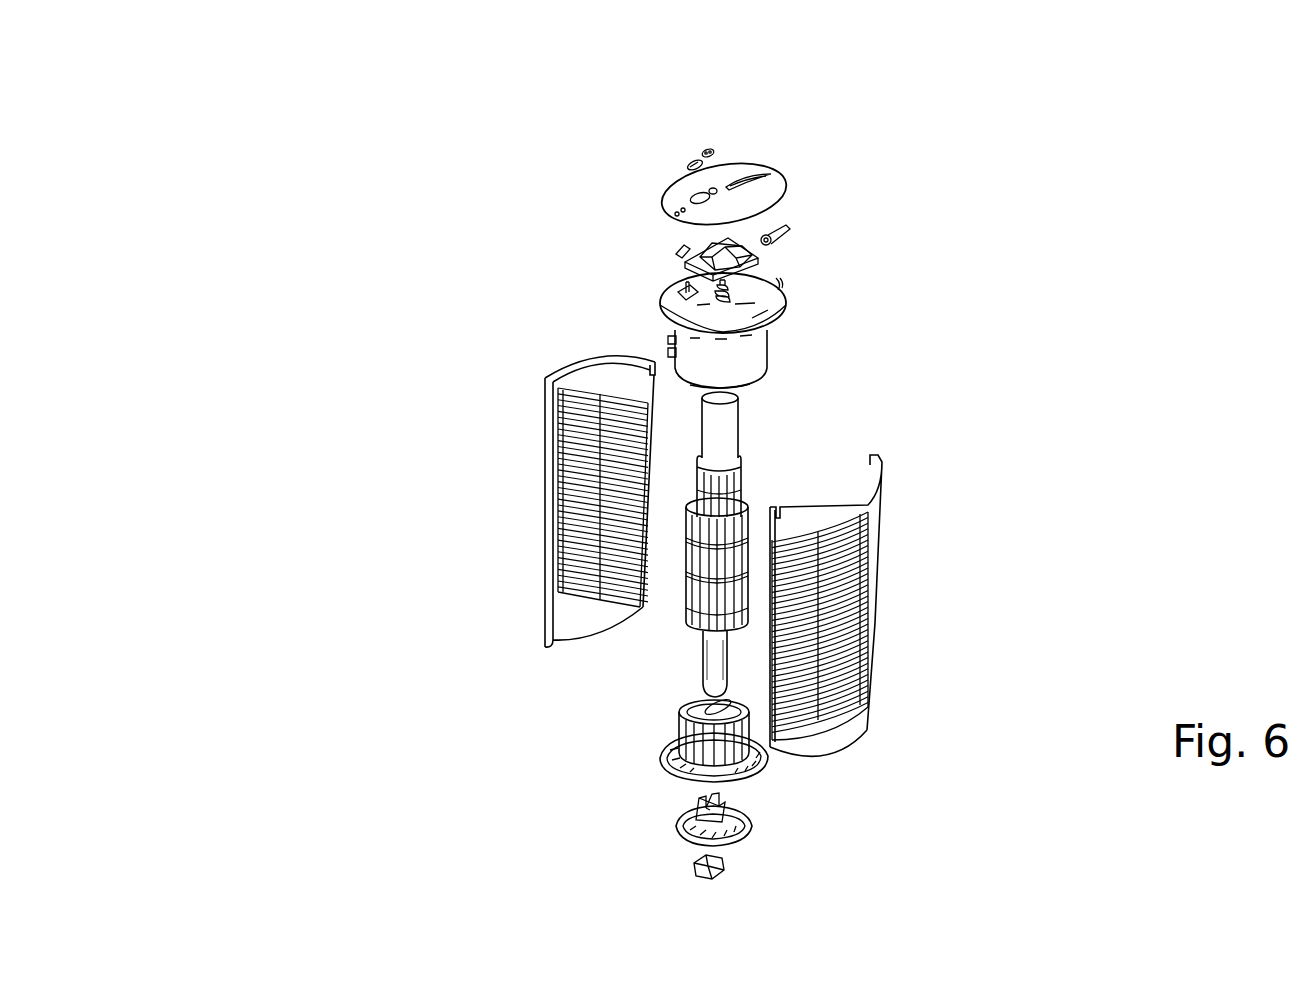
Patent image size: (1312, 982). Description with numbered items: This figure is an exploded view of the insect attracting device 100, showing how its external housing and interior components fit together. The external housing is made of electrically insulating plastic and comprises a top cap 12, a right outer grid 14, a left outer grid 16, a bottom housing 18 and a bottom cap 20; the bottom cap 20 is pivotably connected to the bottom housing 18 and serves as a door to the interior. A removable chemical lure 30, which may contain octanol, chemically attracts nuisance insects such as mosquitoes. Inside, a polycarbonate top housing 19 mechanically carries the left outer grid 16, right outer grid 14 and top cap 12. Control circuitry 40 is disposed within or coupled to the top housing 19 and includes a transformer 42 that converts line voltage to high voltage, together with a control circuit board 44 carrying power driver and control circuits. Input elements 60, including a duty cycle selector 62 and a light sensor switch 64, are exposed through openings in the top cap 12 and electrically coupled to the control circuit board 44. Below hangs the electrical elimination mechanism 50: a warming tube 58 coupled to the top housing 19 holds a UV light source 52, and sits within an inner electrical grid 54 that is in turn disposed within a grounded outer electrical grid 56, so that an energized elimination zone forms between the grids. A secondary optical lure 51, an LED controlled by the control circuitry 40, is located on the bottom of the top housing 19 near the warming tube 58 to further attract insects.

The insect attracting device 100 is at (312, 98).
The top cap 12 is at (757, 199).
The duty cycle selector 62 is at (705, 151).
The light sensor switch 64 is at (678, 165).
The input elements 60 is at (657, 250).
The transformer 42 is at (760, 258).
The control circuitry 40 is at (669, 322).
The control circuit board 44 is at (785, 302).
The top housing 19 is at (767, 338).
The secondary optical lure 51 is at (753, 381).
The warming tube 58 is at (741, 426).
The inner electrical grid 54 is at (697, 478).
The outer electrical grid 56 is at (683, 615).
The UV light source 52 is at (702, 667).
The electrical elimination mechanism 50 is at (687, 589).
The left outer grid 16 is at (552, 490).
The right outer grid 14 is at (873, 627).
The bottom housing 18 is at (760, 753).
The bottom cap 20 is at (687, 820).
The lure 30 is at (730, 869).